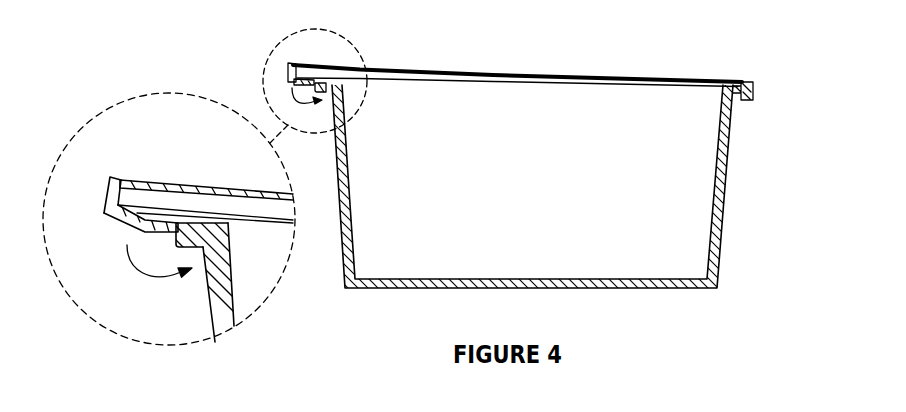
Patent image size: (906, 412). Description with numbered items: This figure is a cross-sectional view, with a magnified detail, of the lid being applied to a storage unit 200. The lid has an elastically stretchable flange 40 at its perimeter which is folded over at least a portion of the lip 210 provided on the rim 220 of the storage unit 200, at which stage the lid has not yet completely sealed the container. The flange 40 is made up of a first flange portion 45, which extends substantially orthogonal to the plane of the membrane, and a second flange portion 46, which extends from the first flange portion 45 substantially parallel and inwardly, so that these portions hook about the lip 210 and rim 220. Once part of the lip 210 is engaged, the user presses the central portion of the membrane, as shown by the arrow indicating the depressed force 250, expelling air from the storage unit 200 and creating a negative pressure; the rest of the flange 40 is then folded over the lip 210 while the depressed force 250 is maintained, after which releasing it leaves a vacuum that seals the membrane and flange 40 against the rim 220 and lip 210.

The storage unit 200 is at (387, 287).
The depressed force 250 is at (512, 62).
The elastically stretchable flange 40 is at (141, 178).
The first flange portion 45 is at (107, 193).
The second flange portion 46 is at (113, 220).
The lip 210 is at (200, 253).
The rim 220 is at (206, 247).